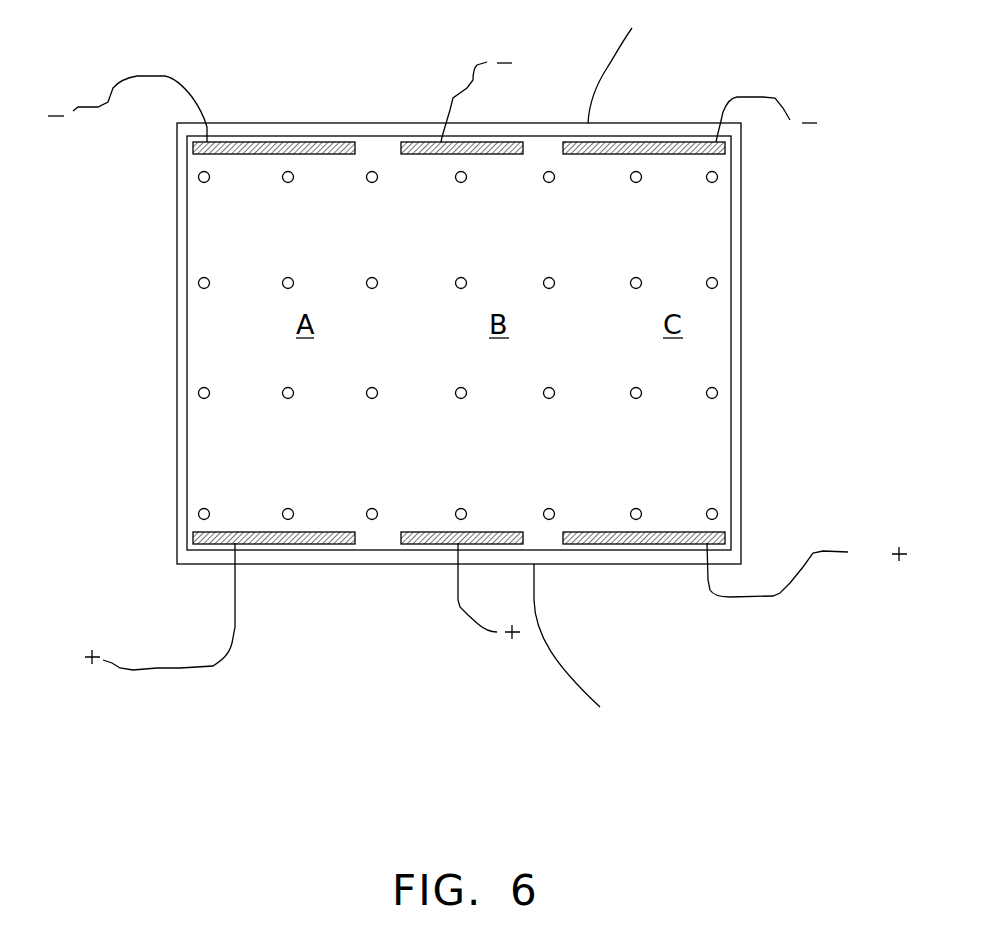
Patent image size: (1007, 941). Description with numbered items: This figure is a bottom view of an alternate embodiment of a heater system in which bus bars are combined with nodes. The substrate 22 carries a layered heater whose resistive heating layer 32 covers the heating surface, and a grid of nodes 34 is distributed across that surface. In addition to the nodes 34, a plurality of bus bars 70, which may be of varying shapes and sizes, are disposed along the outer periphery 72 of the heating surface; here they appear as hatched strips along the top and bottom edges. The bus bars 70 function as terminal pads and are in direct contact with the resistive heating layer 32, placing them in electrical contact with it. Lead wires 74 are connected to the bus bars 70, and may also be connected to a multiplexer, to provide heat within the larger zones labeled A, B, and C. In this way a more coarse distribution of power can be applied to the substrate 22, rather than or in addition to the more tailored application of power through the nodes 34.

The substrate 22 is at (741, 235).
The resistive heating layer 32 is at (718, 452).
The nodes 34 is at (200, 287).
The bus bars 70 is at (288, 143).
The outer periphery 72 is at (602, 367).
The lead wires 74 is at (112, 93).